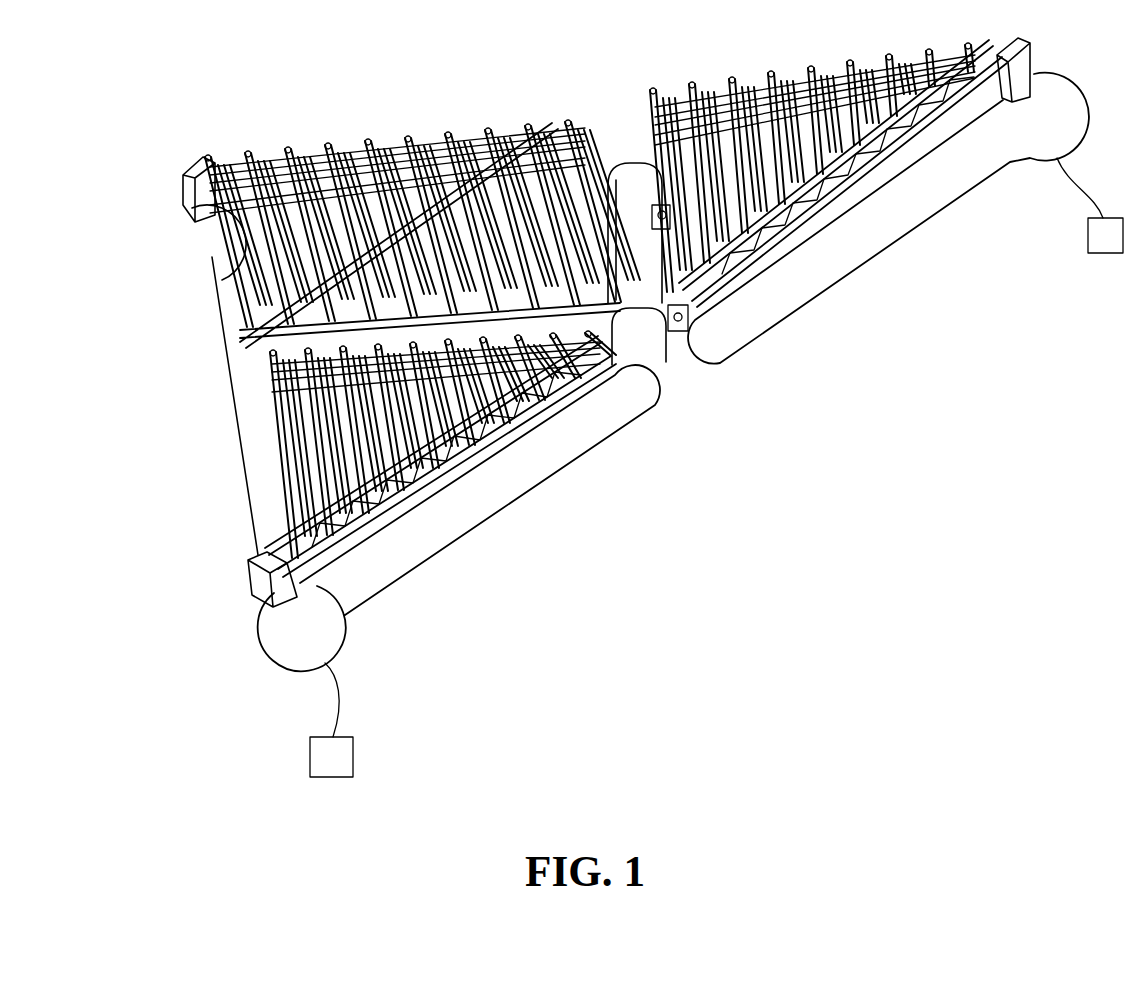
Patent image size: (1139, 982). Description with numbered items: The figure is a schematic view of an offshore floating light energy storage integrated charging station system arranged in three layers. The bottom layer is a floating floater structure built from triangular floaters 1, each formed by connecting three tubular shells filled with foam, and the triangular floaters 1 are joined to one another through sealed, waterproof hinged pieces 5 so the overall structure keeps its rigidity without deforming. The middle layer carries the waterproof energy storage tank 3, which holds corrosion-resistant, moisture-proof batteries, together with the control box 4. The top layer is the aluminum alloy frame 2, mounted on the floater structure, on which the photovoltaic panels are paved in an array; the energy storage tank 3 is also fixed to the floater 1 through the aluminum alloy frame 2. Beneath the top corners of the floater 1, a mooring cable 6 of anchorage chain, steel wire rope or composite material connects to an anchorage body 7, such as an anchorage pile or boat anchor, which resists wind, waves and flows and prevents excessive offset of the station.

The floater 1 is at (943, 177).
The aluminum alloy frame 2 is at (817, 190).
The energy storage tank 3 is at (768, 198).
The control box 4 is at (287, 585).
The hinged piece 5 is at (682, 330).
The mooring cable 6 is at (340, 698).
The anchorage body 7 is at (333, 757).